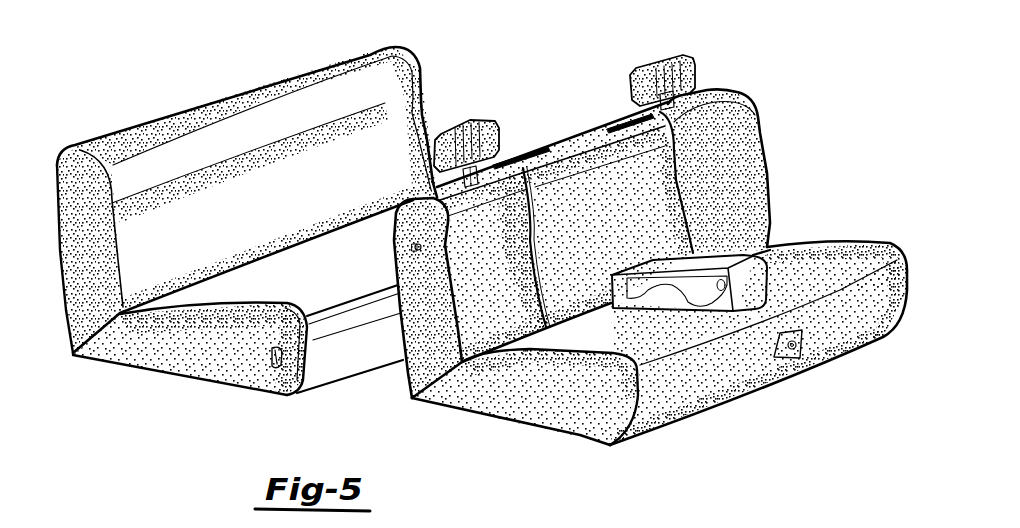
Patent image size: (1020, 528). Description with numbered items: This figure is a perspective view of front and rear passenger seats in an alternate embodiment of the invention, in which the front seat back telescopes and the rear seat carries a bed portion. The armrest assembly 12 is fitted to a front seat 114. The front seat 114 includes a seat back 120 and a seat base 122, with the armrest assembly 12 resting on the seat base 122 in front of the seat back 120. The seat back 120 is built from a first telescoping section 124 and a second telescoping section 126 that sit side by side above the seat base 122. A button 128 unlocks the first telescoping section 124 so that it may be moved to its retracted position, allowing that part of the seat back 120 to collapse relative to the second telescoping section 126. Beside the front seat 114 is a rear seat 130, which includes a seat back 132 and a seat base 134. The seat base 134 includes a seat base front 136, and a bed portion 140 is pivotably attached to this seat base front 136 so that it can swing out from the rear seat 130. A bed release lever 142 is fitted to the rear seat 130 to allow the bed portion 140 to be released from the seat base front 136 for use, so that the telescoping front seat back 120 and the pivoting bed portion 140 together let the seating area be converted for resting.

The armrest assembly 12 is at (710, 259).
The front seat 114 is at (822, 250).
The seat back 120 is at (560, 150).
The seat base 122 is at (692, 410).
The first telescoping section 124 is at (420, 368).
The second telescoping section 126 is at (750, 94).
The button 128 is at (416, 244).
The rear seat 130 is at (118, 352).
The seat back 132 is at (265, 112).
The seat base 134 is at (197, 367).
The seat base front 136 is at (293, 393).
The bed portion 140 is at (355, 362).
The bed release lever 142 is at (274, 368).